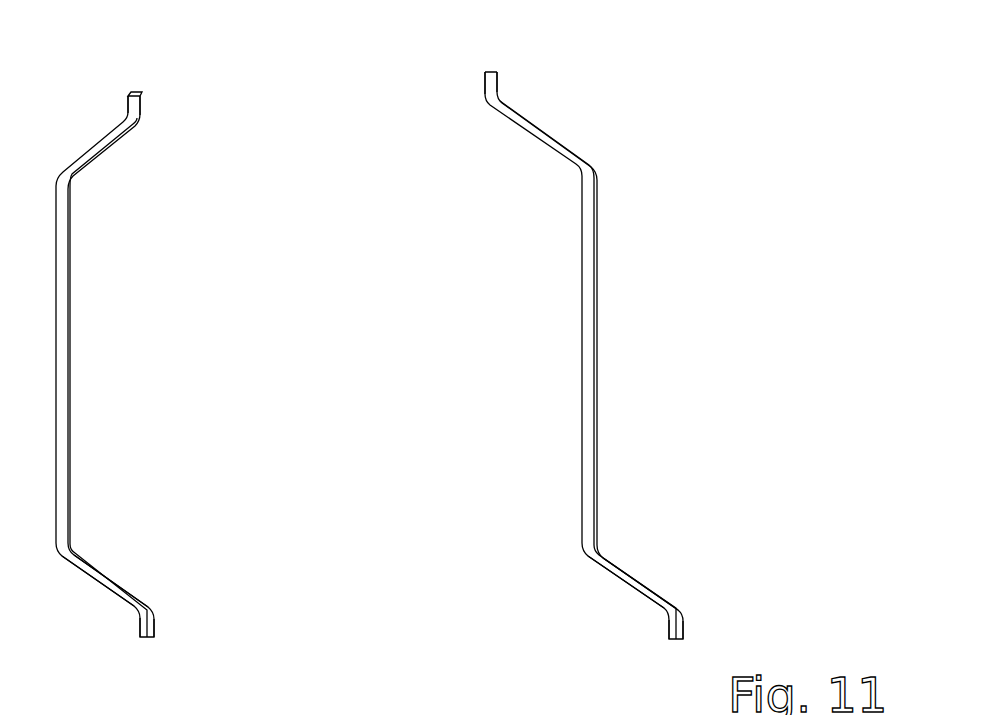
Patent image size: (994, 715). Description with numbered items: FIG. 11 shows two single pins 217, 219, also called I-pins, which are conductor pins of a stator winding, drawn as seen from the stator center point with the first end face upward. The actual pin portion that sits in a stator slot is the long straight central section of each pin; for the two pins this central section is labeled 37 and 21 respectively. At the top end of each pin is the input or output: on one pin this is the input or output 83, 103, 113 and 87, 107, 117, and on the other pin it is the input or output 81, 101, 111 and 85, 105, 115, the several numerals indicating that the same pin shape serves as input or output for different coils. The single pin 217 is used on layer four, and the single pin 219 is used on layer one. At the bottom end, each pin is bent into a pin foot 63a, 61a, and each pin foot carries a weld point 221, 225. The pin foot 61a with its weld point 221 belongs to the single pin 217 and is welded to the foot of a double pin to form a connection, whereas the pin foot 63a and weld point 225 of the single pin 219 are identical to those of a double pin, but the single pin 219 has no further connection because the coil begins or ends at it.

The single pin 219 is at (252, 327).
The single pin 217 is at (670, 322).
The second bracket body 37 is at (63, 338).
The first bracket body 21 is at (590, 352).
The input or output 83 is at (288, 108).
The input or output 103 is at (288, 108).
The input or output 113 is at (288, 108).
The input or output 87 is at (288, 118).
The input or output 107 is at (288, 118).
The input or output 117 is at (133, 104).
The input or output 81 is at (646, 84).
The input or output 101 is at (646, 84).
The input or output 111 is at (646, 84).
The input or output 85 is at (646, 95).
The input or output 105 is at (646, 95).
The input or output 115 is at (491, 80).
The pin foot 63a is at (105, 583).
The pin foot 61a is at (628, 580).
The weld point 225 is at (148, 630).
The weld point 221 is at (672, 628).